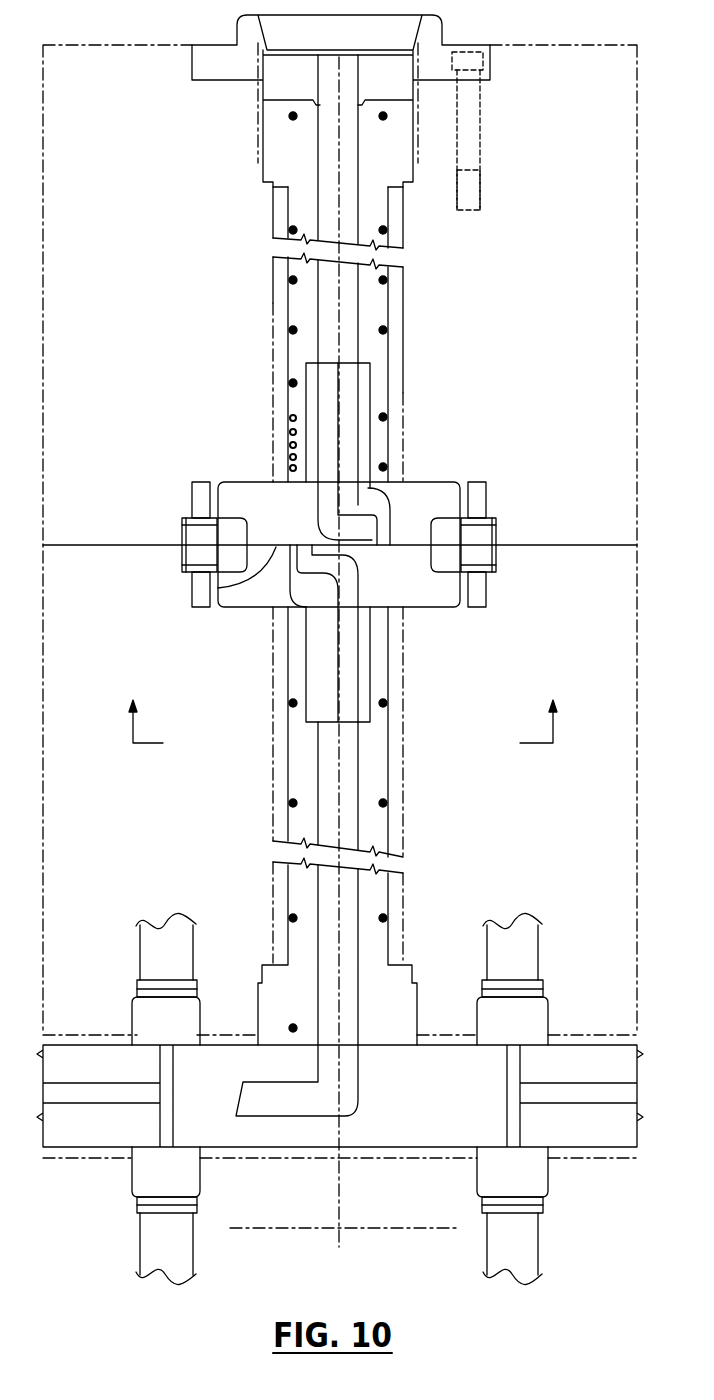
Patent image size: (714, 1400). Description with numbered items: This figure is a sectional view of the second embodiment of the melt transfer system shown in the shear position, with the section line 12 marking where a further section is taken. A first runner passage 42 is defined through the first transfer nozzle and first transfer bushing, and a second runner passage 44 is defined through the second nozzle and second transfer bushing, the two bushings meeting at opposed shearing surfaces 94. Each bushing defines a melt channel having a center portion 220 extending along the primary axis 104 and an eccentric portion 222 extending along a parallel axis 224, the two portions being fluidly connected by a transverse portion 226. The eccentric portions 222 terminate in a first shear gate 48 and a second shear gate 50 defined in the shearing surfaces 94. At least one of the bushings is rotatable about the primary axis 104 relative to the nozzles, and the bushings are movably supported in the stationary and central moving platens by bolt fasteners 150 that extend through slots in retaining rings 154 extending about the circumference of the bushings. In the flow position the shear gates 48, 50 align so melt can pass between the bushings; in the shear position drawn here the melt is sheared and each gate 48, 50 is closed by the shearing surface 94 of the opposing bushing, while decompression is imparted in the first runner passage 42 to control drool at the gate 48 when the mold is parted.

The section line 12- 12 is at (343, 706).
The first runner passage 42 is at (332, 288).
The second runner passage 44 is at (347, 747).
The first shear gate 48 is at (378, 545).
The second shear gate 50 is at (287, 545).
The shearing surface 94 is at (272, 540).
The primary axis 104 is at (338, 1162).
The bolt fastener 150 is at (195, 477).
The retaining ring 154 is at (182, 520).
The center portion 220 is at (327, 692).
The eccentric portion 222 is at (296, 552).
The parallel axis 224 is at (300, 565).
The transverse portion 226 is at (317, 583).